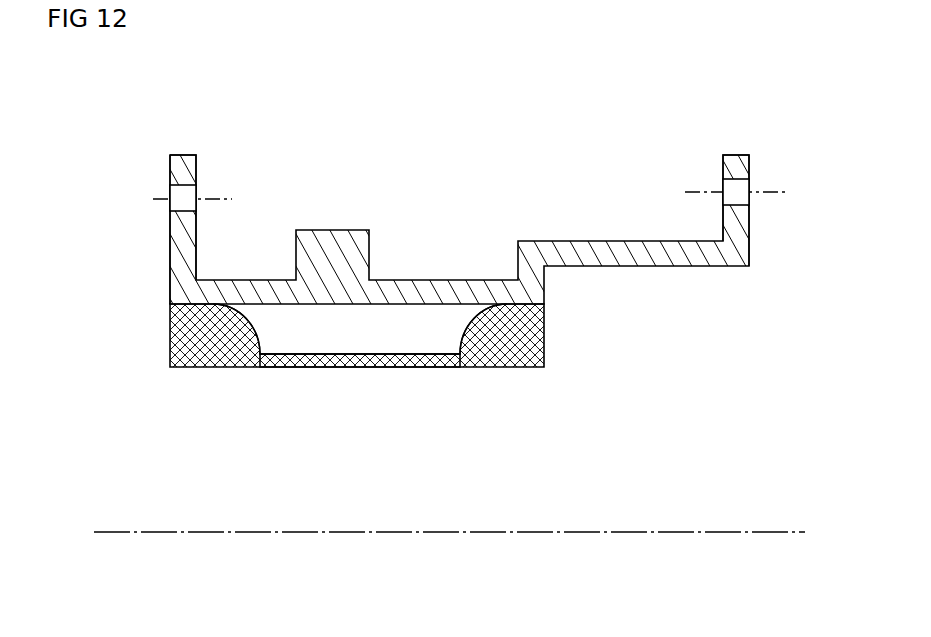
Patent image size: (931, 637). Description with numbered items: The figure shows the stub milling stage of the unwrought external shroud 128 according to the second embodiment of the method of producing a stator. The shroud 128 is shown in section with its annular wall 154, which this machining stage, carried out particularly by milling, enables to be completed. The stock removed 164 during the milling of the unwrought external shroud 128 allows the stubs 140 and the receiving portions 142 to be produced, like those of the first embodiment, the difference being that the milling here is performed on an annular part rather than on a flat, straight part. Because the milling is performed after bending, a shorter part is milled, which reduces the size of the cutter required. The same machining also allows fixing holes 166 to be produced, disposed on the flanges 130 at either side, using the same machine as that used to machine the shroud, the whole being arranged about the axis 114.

The rotational axis 114 is at (581, 530).
The unwrought external shroud 128 is at (446, 259).
The flanges 130 is at (188, 168).
The stubs 140 is at (370, 330).
The receiving portions 142 is at (283, 356).
The annular wall 154 is at (453, 293).
The stock removed 164 is at (500, 343).
The fixing holes 166 is at (191, 192).